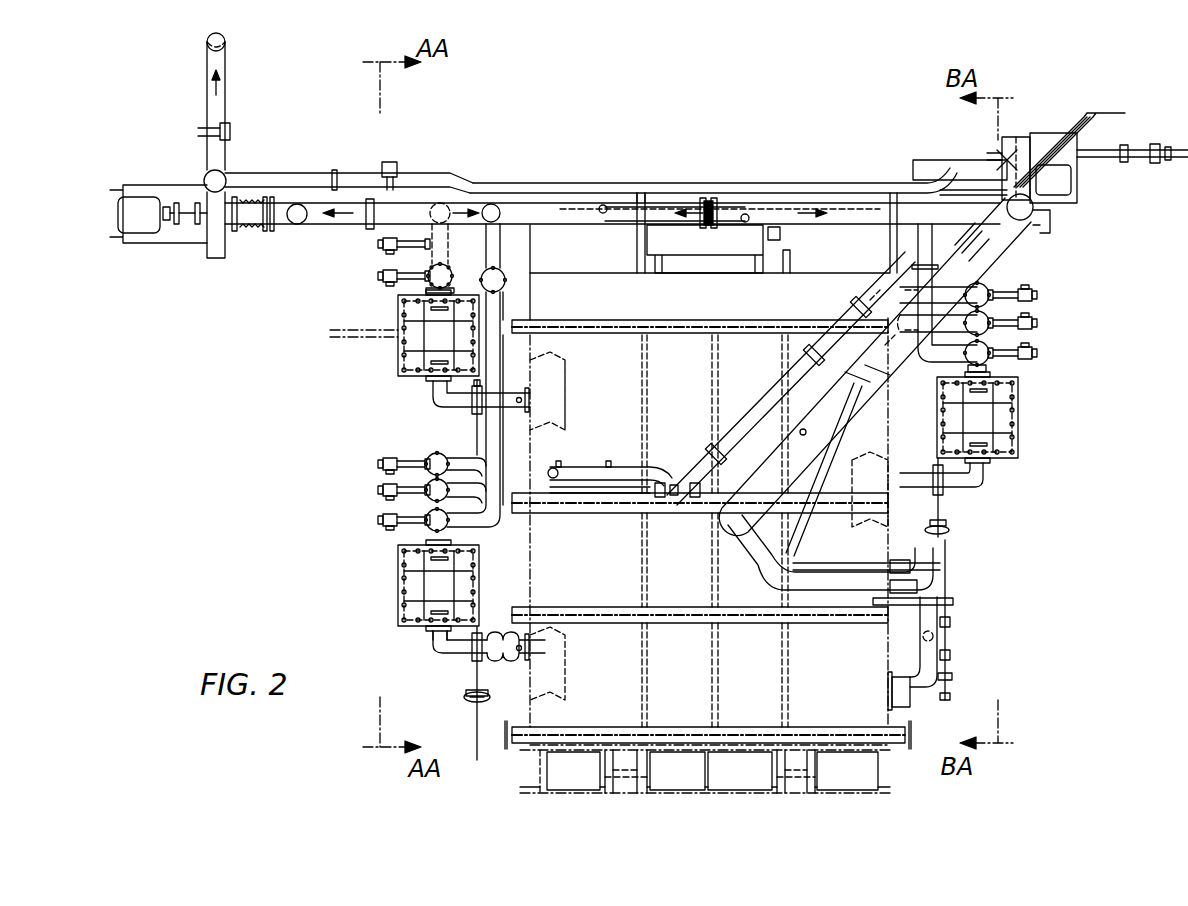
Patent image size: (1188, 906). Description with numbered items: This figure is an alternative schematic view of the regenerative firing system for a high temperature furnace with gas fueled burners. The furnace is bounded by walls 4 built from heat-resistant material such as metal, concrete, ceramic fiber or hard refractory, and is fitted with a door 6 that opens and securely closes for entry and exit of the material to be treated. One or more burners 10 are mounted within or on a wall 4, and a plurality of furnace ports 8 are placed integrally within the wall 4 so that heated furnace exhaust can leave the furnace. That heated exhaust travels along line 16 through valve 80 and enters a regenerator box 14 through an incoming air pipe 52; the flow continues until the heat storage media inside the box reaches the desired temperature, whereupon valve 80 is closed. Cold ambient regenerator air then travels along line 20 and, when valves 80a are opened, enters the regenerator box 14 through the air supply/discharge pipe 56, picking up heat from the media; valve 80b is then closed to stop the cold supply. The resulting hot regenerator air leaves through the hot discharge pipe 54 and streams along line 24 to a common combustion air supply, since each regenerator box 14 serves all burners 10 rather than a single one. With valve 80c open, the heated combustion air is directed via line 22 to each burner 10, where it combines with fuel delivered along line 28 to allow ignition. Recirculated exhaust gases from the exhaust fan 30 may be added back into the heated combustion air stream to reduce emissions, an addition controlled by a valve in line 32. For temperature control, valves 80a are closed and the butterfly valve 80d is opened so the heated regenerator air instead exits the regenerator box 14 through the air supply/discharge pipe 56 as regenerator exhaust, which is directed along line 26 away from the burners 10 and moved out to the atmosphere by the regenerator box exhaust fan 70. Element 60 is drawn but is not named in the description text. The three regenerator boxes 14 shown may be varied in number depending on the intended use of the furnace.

The wall 4 is at (545, 724).
The door 6 is at (715, 777).
The furnace port 8 is at (567, 422).
The burner 10 is at (504, 461).
The regenerator box 14 is at (398, 318).
The heated furnace exhaust line 16 is at (548, 394).
The cold regenerator air supply line 20 is at (425, 250).
The common combustion air supply line 22 is at (1033, 215).
The hot regenerator air line 24 is at (485, 235).
The regenerator exhaust line 26 is at (207, 152).
The fuel supply line 28 is at (728, 435).
The exhaust fan 30 is at (1077, 183).
The recirculation valve line 32 is at (822, 183).
The incoming air pipe 52 is at (432, 640).
The hot discharge pipe 54 is at (447, 283).
The air supply/discharge pipe 56 is at (445, 462).
The connecting pipe 60 is at (455, 490).
The regenerator box exhaust fan 70 is at (140, 225).
The valve 80 is at (470, 420).
The valve 80a is at (380, 462).
The valve 80b is at (380, 518).
The valve 80c is at (560, 466).
The butterfly valve 80d is at (380, 488).